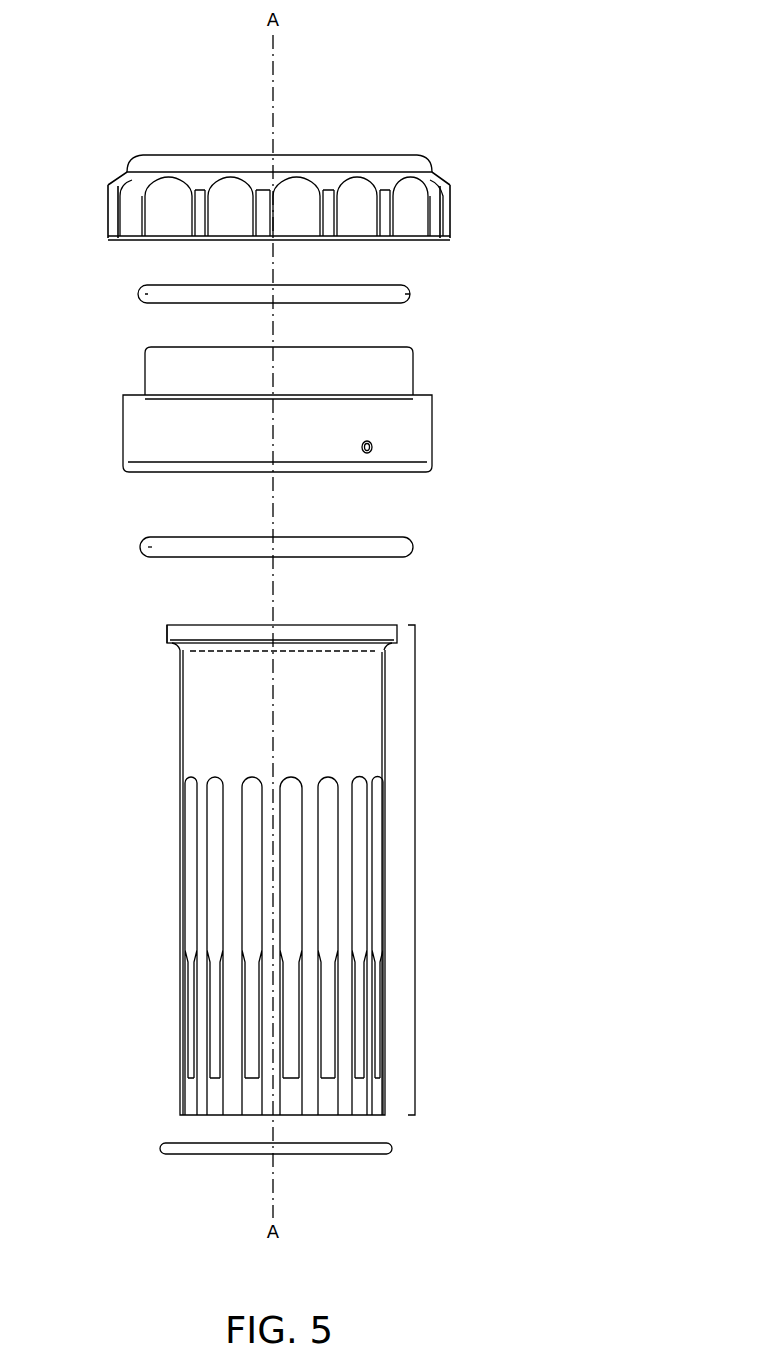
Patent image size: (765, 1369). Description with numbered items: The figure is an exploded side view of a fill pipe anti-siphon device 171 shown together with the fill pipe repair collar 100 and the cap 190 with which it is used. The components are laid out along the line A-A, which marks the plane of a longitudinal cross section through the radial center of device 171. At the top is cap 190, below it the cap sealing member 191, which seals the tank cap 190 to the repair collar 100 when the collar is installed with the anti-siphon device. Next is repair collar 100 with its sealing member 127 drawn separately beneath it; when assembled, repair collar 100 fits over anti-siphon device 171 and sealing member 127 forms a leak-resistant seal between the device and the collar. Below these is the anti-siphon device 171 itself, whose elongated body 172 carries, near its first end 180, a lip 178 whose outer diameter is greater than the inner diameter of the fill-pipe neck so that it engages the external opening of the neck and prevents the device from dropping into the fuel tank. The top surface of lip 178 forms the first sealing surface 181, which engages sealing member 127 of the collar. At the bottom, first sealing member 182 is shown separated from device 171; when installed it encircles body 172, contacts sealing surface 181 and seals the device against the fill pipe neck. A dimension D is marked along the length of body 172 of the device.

The cap 190 is at (482, 142).
The cap sealing member 191 is at (140, 292).
The fill pipe repair collar 100 is at (482, 333).
The sealing member 127 is at (148, 547).
The anti-siphon device 171 is at (364, 873).
The first end 180 is at (252, 625).
The lip 178 is at (170, 634).
The first sealing surface 181 is at (180, 645).
The body 172 is at (282, 882).
The first sealing member 182 is at (165, 1148).
The filter length dimension D is at (430, 870).